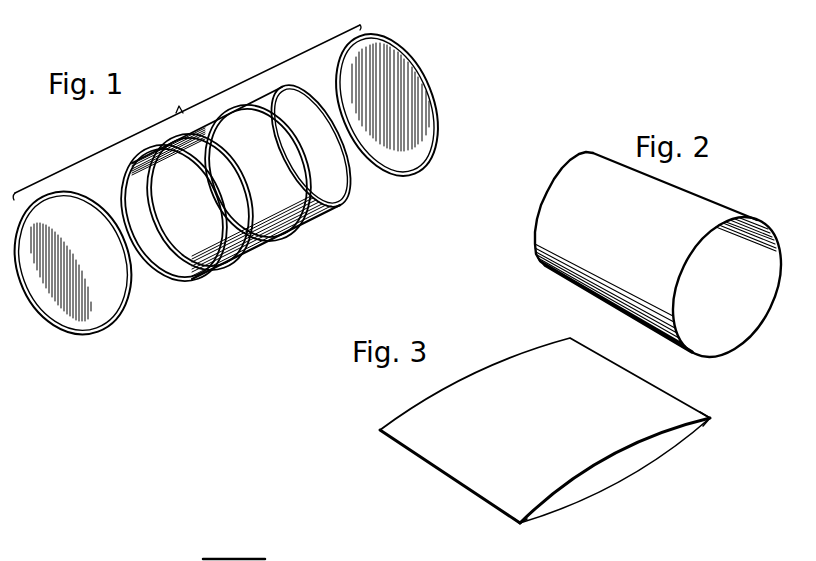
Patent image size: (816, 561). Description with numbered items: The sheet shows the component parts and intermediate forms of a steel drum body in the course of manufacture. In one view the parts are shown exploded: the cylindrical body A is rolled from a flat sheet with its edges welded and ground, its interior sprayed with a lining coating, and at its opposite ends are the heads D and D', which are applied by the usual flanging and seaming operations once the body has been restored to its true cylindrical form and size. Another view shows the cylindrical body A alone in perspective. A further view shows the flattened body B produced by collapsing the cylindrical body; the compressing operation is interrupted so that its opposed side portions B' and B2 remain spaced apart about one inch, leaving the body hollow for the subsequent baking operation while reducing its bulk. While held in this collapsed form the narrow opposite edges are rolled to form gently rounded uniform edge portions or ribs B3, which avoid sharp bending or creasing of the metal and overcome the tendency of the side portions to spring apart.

In FIG. 1, the head D is at (75, 273).
In FIG. 1, the head D' is at (388, 105).
In FIG. 2, the cylindrical body A is at (556, 272).
In FIG. 3, the flattened body B is at (545, 430).
In FIG. 3, the side portion B' is at (615, 470).
In FIG. 3, the side portion B2 is at (633, 480).
In FIG. 3, the edge portion or rib B3 is at (710, 418).